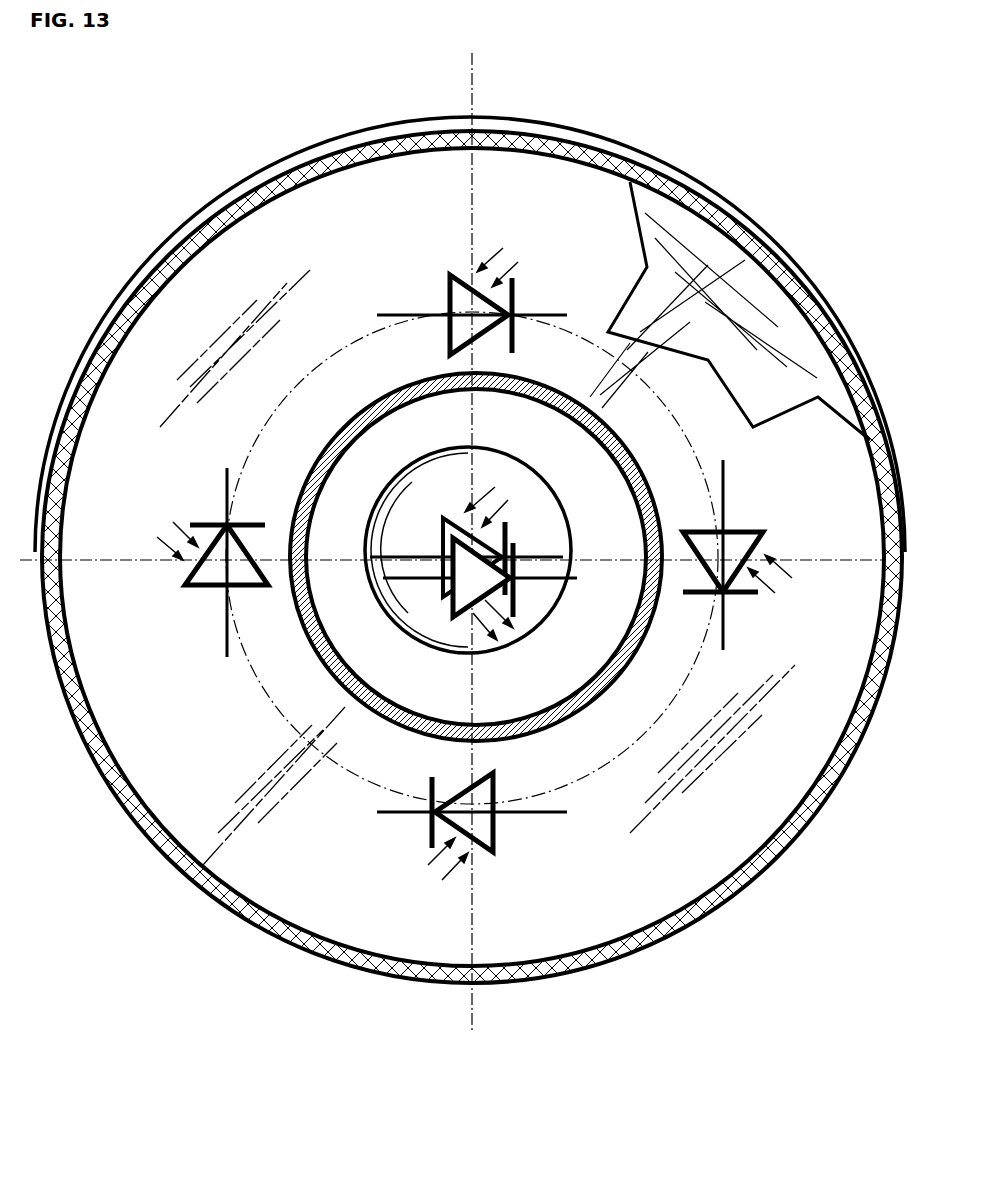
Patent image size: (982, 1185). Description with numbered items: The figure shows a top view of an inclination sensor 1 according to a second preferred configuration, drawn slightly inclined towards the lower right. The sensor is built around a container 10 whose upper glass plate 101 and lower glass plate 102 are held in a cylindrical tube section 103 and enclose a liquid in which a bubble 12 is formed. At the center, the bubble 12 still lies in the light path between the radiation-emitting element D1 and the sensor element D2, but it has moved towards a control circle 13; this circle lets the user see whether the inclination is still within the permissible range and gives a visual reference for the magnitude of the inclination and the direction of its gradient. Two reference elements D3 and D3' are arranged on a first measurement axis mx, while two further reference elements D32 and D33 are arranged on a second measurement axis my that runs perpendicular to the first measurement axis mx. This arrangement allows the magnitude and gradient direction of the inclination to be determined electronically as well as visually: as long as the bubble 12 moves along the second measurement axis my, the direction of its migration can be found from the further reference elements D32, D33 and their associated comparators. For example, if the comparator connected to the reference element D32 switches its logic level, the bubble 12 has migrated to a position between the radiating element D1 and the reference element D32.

The inclination sensor 1 is at (738, 160).
The container 10 is at (240, 168).
The upper glass plate 101 is at (755, 312).
The lower glass plate 102 is at (192, 278).
The cylindrical tube section 103 is at (143, 277).
The bubble 12 is at (447, 473).
The control circle 13 is at (342, 428).
The radiating element D1 is at (480, 602).
The sensor element D2 is at (466, 538).
The reference element D3 is at (212, 562).
The reference element D3' is at (737, 555).
The further reference element D32 is at (473, 826).
The further reference element D33 is at (472, 301).
The first measurement axis mx is at (452, 545).
The second measurement axis my is at (490, 541).